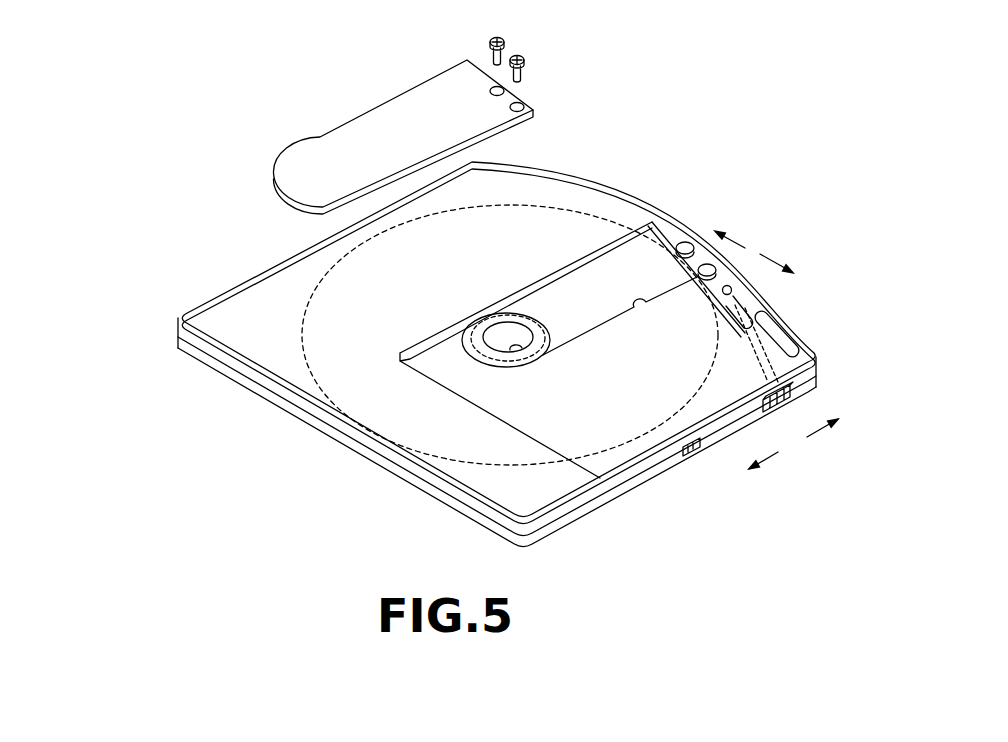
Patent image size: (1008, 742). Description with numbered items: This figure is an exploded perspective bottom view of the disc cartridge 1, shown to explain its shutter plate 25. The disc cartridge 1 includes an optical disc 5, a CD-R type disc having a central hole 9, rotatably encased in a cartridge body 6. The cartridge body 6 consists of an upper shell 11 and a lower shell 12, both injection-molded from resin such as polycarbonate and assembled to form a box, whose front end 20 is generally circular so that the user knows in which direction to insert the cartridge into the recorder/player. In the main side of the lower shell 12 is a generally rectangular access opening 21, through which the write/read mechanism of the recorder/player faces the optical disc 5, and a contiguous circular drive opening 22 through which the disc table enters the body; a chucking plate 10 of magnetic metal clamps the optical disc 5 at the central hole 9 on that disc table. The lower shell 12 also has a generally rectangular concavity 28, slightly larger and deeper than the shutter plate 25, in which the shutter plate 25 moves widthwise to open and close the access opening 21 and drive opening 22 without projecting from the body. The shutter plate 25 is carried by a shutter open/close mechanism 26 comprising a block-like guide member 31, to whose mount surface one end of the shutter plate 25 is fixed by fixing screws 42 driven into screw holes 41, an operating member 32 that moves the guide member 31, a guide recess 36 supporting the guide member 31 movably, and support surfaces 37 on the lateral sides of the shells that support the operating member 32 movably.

The disc cartridge 1 is at (273, 488).
The optical disc 5 is at (352, 290).
The cartridge body 6 is at (96, 297).
The central hole 9 is at (530, 345).
The chucking plate 10 is at (465, 313).
The upper shell 11 is at (180, 350).
The lower shell 12 is at (187, 337).
The front end 20 is at (586, 178).
The access opening 21 is at (647, 305).
The drive opening 22 is at (480, 357).
The shutter plate 25 is at (370, 135).
The shutter open/close mechanism 26 is at (782, 185).
The concavity 28 is at (417, 347).
The guide member 31 is at (702, 243).
The operating member 32 is at (777, 412).
The guide recess 36 is at (763, 307).
The support surfaces 37 is at (696, 458).
The screw holes 41 is at (685, 240).
The fixing screws 42 is at (503, 41).